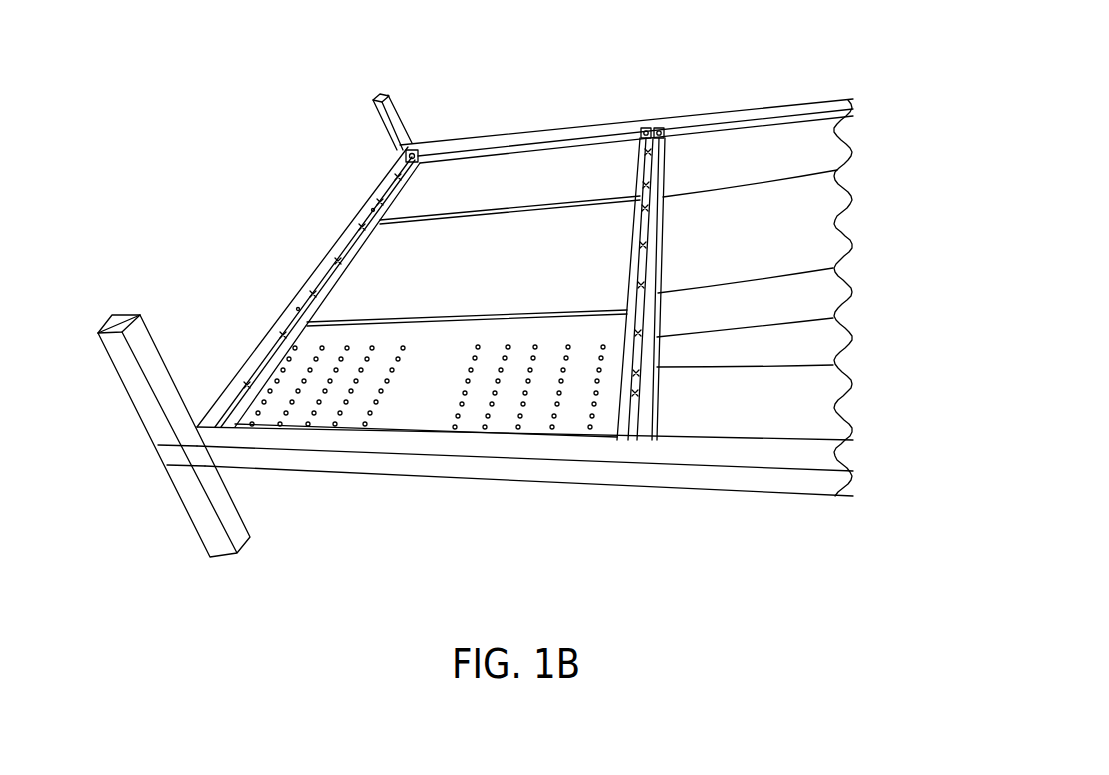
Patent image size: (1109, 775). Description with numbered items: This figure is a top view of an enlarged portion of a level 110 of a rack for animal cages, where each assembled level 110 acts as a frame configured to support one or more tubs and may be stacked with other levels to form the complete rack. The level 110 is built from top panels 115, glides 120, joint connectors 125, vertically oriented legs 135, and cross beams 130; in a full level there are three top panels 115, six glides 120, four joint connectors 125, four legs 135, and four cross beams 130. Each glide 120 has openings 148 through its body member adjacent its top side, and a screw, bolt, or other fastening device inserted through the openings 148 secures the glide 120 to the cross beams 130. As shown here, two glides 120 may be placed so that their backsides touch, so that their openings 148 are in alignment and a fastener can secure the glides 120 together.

The level 110 is at (259, 223).
The top panel 115 is at (472, 170).
The glide 120 is at (833, 318).
The joint connector 125 is at (173, 453).
The cross beam 130 is at (568, 130).
The vertically oriented leg 135 is at (373, 122).
The openings 148 is at (644, 128).